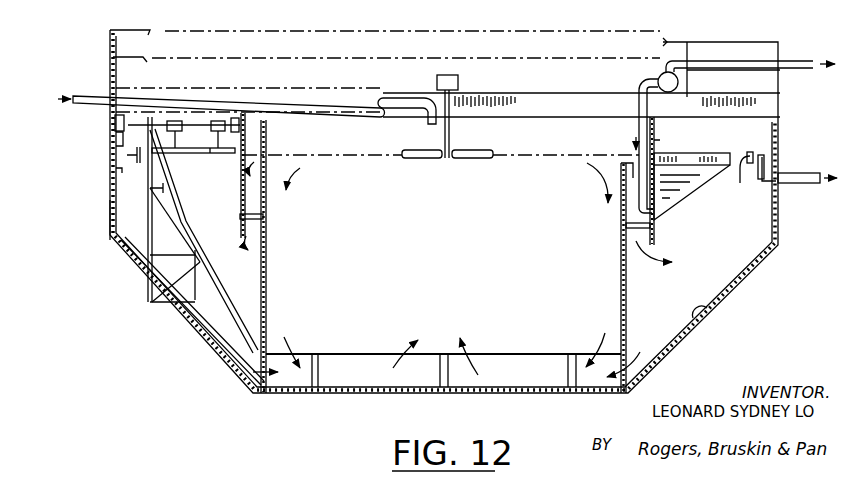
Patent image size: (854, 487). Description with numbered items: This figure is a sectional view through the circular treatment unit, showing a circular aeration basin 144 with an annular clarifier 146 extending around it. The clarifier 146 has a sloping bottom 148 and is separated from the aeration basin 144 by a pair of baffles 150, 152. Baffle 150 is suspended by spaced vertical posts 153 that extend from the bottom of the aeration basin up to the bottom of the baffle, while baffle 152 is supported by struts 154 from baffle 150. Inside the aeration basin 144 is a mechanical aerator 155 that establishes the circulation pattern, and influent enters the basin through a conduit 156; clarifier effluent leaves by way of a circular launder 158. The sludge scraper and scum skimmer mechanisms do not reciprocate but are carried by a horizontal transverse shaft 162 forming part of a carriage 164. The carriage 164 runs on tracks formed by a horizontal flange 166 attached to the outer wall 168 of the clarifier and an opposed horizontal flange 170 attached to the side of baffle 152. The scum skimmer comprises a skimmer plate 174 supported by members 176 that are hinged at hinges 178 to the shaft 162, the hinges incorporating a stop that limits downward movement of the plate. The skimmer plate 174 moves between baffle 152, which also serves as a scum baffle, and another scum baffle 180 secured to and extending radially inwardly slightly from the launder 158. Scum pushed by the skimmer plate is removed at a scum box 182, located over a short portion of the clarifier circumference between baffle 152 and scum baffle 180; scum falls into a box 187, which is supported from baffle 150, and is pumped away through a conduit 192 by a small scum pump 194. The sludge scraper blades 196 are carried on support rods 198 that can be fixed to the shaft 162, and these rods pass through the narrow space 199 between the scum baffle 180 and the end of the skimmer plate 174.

The circular aeration basin 144 is at (463, 261).
The annular clarifier 146 is at (725, 267).
The sloping bottom 148 is at (708, 311).
The baffle 150 is at (266, 235).
The baffle 152 is at (252, 210).
The vertical posts 153 is at (320, 370).
The struts 154 is at (252, 218).
The mechanical aerator 155 is at (473, 155).
The conduit 156 is at (361, 103).
The circular launder 158 is at (122, 160).
The horizontal transverse shaft 162 is at (158, 125).
The carriage 164 is at (199, 123).
The horizontal flange 166 is at (130, 128).
The outer wall 168 is at (112, 211).
The horizontal flange 170 is at (244, 148).
The skimmer plate 174 is at (208, 155).
The members 176 is at (207, 138).
The hinges 178 is at (222, 128).
The scum baffle 180 is at (124, 140).
The scum box 182 is at (690, 147).
The box 187 is at (688, 198).
The conduit 192 is at (640, 131).
The scum pump 194 is at (665, 77).
The sludge scraper blades 196 is at (224, 329).
The support rods 198 is at (146, 225).
The narrow space 199 is at (140, 165).